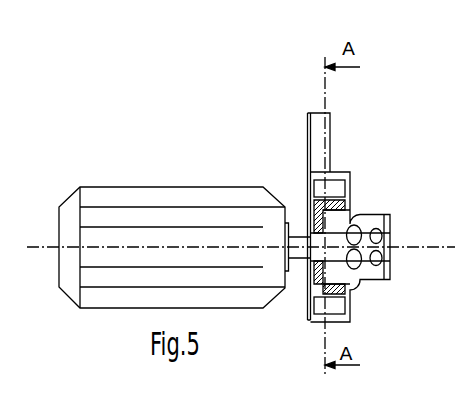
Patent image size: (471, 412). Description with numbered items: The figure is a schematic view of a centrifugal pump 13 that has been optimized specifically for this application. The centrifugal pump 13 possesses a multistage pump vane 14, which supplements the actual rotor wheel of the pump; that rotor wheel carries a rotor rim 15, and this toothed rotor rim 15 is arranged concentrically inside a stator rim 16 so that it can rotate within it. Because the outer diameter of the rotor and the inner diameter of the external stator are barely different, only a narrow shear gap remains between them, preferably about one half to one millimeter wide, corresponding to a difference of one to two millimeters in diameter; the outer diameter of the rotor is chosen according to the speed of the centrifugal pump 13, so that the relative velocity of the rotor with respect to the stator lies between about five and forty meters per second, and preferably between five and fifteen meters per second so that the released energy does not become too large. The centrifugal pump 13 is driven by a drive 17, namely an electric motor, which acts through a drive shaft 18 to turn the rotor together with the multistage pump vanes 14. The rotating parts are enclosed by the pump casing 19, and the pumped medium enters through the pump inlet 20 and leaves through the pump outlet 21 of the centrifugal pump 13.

The centrifugal pump 13 is at (377, 128).
The multistage pump vane 14 is at (357, 268).
The rotor rim 15 is at (350, 205).
The stator rim 16 is at (308, 320).
The drive 17 is at (117, 200).
The drive shaft 18 is at (300, 237).
The pump casing 19 is at (358, 213).
The pump inlet 20 is at (391, 243).
The pump outlet 21 is at (327, 116).